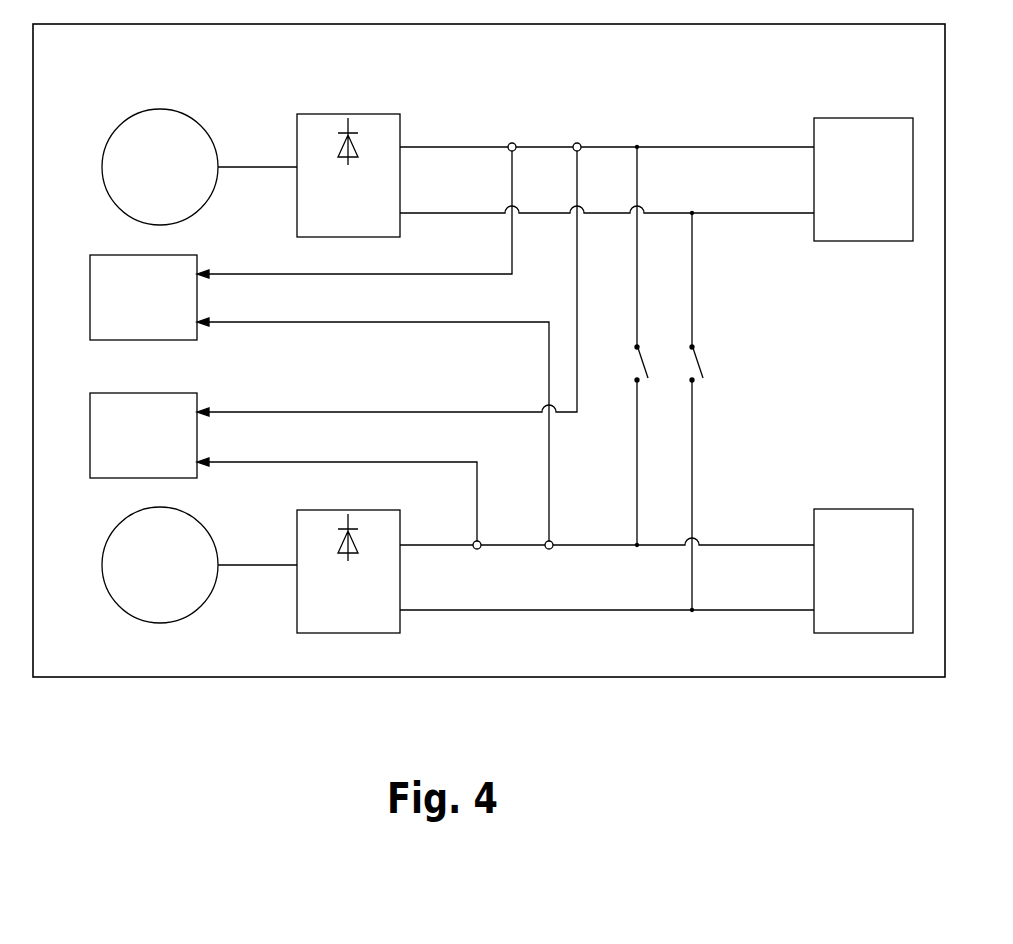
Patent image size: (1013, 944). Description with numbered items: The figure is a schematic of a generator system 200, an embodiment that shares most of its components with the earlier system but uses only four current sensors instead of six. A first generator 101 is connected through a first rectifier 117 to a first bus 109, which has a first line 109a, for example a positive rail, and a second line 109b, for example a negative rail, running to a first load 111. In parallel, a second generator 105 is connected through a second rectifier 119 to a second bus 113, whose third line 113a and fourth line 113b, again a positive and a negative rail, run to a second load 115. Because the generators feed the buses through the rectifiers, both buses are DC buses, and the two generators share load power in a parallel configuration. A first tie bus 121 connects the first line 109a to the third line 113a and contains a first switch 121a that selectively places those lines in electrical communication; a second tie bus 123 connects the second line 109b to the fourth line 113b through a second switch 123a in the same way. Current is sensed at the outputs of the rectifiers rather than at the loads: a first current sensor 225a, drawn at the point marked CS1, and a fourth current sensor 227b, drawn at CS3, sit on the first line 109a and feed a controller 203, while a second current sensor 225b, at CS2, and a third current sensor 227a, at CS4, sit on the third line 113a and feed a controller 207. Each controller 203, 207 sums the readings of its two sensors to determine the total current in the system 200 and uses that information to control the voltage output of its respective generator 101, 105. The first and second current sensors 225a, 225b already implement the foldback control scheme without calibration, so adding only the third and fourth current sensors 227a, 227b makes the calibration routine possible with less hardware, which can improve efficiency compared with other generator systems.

The generator system 200 is at (178, 61).
The first generator 101 is at (136, 112).
The second generator 105 is at (108, 538).
The first rectifier 117 is at (327, 113).
The second rectifier 119 is at (327, 509).
The first load 111 is at (851, 117).
The second load 115 is at (847, 508).
The controller 203 is at (89, 272).
The controller 207 is at (89, 410).
The first bus 109 is at (607, 137).
The first line 109a is at (749, 145).
The second line 109b is at (752, 211).
The second bus 113 is at (607, 604).
The third line 113a is at (790, 548).
The fourth line 113b is at (790, 612).
The first tie bus 121 is at (659, 346).
The first switch 121a is at (660, 348).
The second tie bus 123 is at (713, 412).
The second switch 123a is at (700, 363).
The first current sensor 225a is at (509, 152).
The second current sensor 225b is at (481, 541).
The third current sensor 227a is at (553, 541).
The fourth current sensor 227b is at (574, 152).
The current sensor 1 CS1 is at (513, 134).
The current sensor 2 CS2 is at (473, 559).
The current sensor 3 CS3 is at (578, 134).
The current sensor 4 CS4 is at (545, 559).